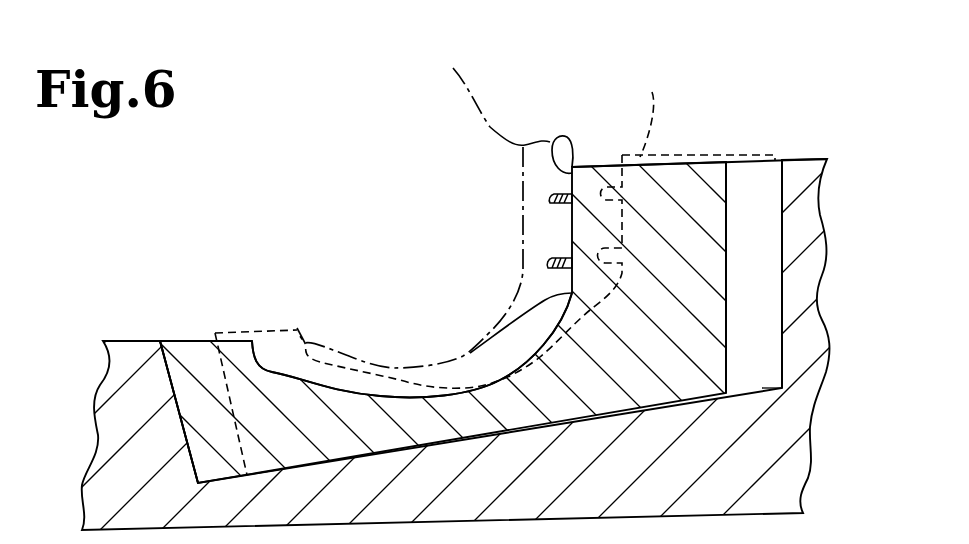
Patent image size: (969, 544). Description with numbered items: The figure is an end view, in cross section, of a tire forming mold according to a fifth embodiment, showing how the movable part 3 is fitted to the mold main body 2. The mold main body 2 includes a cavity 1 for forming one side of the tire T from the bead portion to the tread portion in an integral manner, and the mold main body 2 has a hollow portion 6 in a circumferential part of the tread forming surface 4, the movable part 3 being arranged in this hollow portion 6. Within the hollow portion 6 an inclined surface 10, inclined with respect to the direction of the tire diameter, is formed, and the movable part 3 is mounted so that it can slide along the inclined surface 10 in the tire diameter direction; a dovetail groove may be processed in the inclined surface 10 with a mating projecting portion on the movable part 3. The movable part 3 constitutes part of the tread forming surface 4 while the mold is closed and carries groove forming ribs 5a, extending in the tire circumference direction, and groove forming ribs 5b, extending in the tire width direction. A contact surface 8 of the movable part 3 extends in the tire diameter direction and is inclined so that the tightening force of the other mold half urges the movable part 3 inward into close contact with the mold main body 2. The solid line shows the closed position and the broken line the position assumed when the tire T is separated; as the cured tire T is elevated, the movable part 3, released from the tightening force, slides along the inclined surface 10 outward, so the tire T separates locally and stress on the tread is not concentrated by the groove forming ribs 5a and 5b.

The cavity 1 is at (467, 355).
The mold main body 2 is at (144, 341).
The movable part 3 is at (587, 172).
The tread forming surface 4 is at (554, 138).
The groove forming ribs 5a is at (558, 195).
The groove forming ribs 5b is at (548, 323).
The hollow portion 6 is at (753, 197).
The contact surface 8 is at (743, 432).
The inclined surface 10 is at (762, 388).
The tire T is at (423, 208).